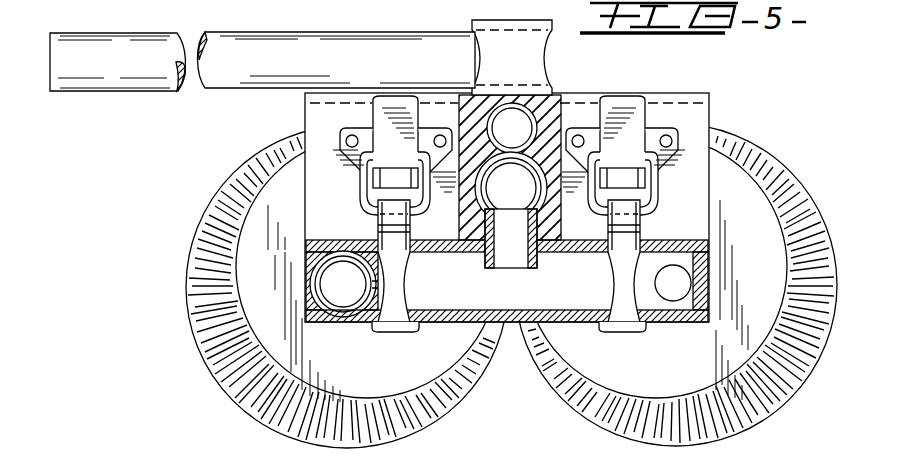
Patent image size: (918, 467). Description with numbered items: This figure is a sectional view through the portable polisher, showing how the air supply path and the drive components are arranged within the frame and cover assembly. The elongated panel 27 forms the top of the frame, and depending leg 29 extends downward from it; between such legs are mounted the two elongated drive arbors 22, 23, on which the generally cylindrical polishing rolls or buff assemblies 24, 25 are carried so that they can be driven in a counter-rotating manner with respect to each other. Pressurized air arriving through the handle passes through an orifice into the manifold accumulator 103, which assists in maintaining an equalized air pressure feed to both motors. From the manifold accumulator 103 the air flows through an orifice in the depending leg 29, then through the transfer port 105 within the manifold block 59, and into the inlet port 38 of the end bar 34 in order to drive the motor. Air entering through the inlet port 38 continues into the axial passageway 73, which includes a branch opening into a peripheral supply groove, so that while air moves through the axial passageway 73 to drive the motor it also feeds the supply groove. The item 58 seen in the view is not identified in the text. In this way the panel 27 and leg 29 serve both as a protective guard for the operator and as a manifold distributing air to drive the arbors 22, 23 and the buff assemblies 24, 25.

The elongated drive arbor 22 is at (767, 301).
The elongated drive arbor 23 is at (263, 301).
The polishing roll or buff assembly 24 is at (795, 370).
The polishing roll or buff assembly 25 is at (192, 288).
The elongated panel 27 is at (601, 93).
The depending leg 29 is at (689, 235).
The end bar 34 is at (500, 325).
The inlet port 38 is at (581, 306).
The handle tube 58 is at (430, 45).
The manifold block 59 is at (552, 110).
The axial passageway 73 is at (683, 293).
The manifold accumulator 103 is at (526, 138).
The transfer port 105 is at (525, 199).